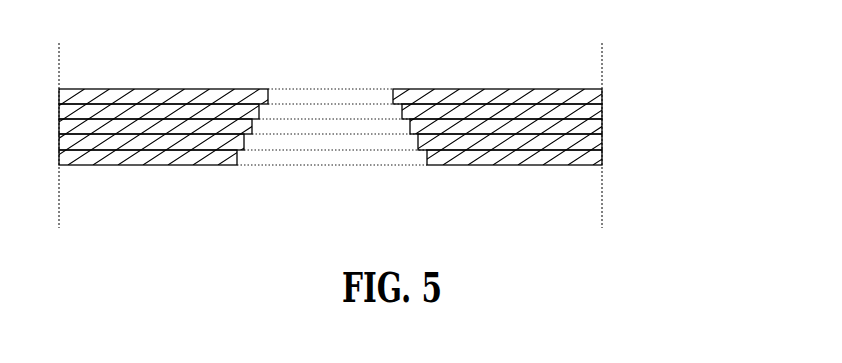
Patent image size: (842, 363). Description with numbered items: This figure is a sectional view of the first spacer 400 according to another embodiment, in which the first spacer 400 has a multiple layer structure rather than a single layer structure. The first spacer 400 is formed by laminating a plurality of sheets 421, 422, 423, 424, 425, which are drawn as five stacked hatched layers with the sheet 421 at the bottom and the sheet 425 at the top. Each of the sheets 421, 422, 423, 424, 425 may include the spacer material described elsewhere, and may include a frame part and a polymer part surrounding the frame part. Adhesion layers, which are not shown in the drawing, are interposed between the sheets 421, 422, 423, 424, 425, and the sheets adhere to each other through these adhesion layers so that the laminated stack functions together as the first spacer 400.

The first spacer 400 is at (390, 132).
The sheet 421 is at (355, 154).
The sheet 422 is at (604, 142).
The sheet 423 is at (604, 128).
The sheet 424 is at (604, 111).
The sheet 425 is at (604, 95).